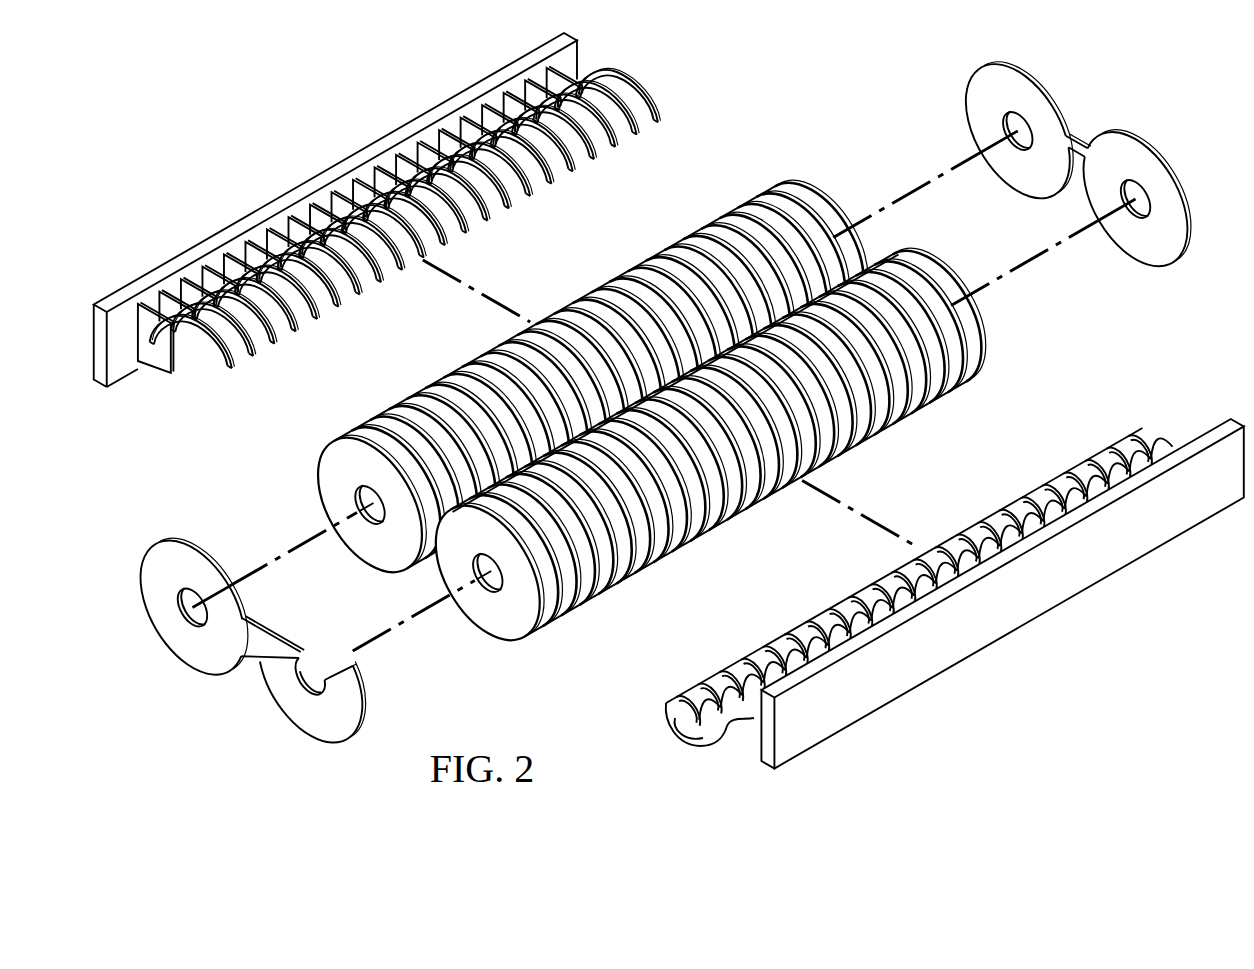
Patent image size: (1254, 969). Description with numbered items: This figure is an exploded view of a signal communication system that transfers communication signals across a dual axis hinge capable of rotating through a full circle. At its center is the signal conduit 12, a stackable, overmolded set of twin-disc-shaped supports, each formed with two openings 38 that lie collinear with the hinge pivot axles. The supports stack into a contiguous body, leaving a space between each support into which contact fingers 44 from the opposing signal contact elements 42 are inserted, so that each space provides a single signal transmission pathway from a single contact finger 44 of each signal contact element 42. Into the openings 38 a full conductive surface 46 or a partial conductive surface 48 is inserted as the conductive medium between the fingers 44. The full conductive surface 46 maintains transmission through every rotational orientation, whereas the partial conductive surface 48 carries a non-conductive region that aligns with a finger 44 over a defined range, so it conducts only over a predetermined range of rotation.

The signal conduit 12 is at (806, 186).
The openings 38 is at (356, 501).
The signal contact elements 42 is at (328, 169).
The contact fingers 44 is at (627, 78).
The full conductive surface 46 is at (1024, 66).
The partial conductive surface 48 is at (204, 546).